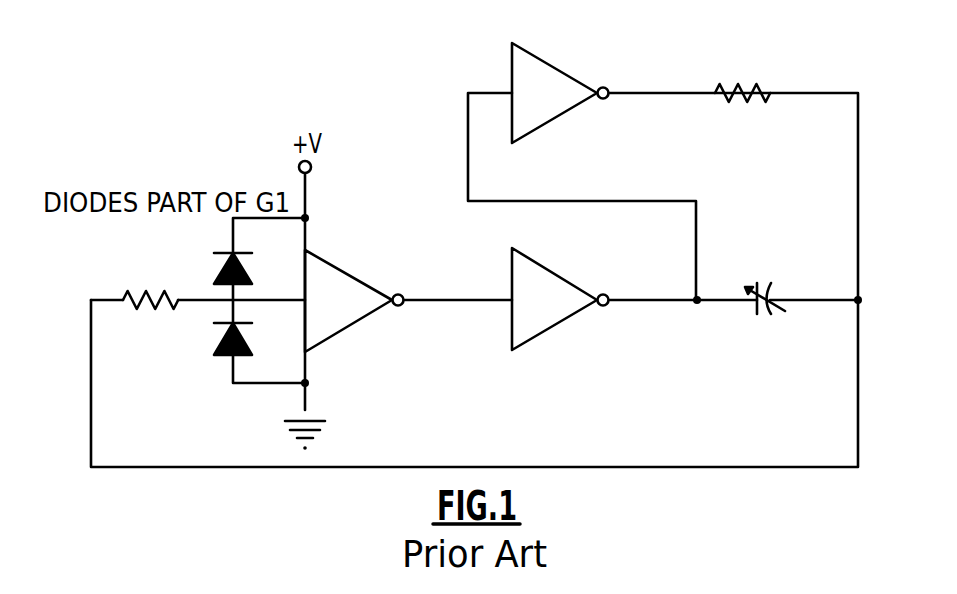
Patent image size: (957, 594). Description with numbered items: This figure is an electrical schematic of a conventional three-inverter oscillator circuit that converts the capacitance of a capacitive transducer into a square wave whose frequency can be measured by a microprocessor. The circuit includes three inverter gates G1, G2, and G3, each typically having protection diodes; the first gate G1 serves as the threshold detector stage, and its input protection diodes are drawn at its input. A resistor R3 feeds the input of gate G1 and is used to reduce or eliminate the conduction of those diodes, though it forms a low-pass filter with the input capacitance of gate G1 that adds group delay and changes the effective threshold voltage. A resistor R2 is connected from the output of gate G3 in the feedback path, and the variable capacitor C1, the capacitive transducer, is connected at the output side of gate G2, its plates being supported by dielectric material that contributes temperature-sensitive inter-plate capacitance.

The inverter gate G1 is at (354, 301).
The inverter gate G2 is at (560, 299).
The inverter gate G3 is at (560, 93).
The resistor R2 is at (744, 126).
The resistor R3 is at (150, 331).
The variable capacitor C1 is at (769, 303).